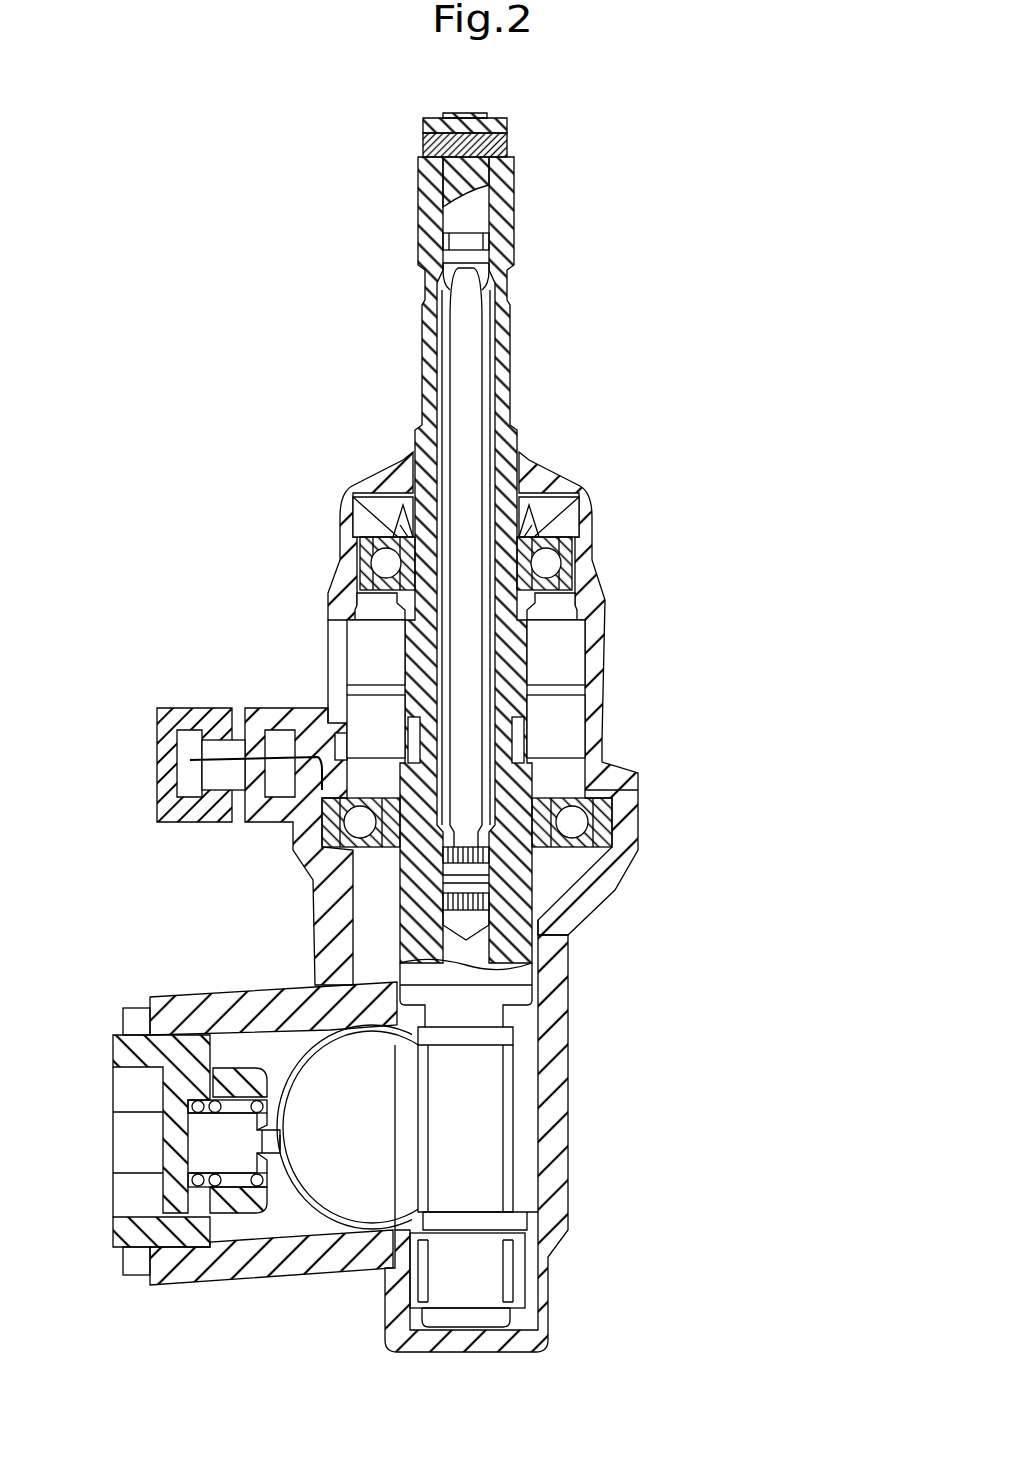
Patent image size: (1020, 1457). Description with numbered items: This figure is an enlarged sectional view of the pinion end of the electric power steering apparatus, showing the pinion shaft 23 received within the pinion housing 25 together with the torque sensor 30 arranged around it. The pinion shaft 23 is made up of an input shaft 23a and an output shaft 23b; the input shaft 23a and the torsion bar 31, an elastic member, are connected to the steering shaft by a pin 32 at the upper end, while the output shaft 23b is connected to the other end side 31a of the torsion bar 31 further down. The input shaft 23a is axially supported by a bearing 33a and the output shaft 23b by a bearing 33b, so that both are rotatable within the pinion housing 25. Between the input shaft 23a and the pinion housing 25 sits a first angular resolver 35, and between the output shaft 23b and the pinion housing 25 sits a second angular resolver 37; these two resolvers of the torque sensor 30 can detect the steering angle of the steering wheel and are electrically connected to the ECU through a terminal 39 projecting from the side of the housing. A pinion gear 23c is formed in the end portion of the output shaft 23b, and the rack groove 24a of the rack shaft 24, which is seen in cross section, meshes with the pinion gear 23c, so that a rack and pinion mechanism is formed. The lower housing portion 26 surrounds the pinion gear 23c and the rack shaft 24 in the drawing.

The pinion shaft 23 is at (521, 541).
The input shaft 23a is at (508, 365).
The output shaft 23b is at (522, 970).
The pinion gear 23c is at (512, 1130).
The rack shaft 24 is at (323, 1172).
The rack groove 24a is at (437, 1150).
The pinion housing 25 is at (640, 790).
The lower housing 26 is at (620, 890).
The torque sensor 30 is at (366, 678).
The torsion bar 31 is at (472, 300).
The other end side of the torsion bar 31a is at (432, 900).
The pin 32 is at (423, 140).
The bearing 33a is at (548, 562).
The bearing 33b is at (575, 825).
The first angular resolver 35 is at (365, 655).
The second angular resolver 37 is at (355, 705).
The terminal 39 is at (185, 770).